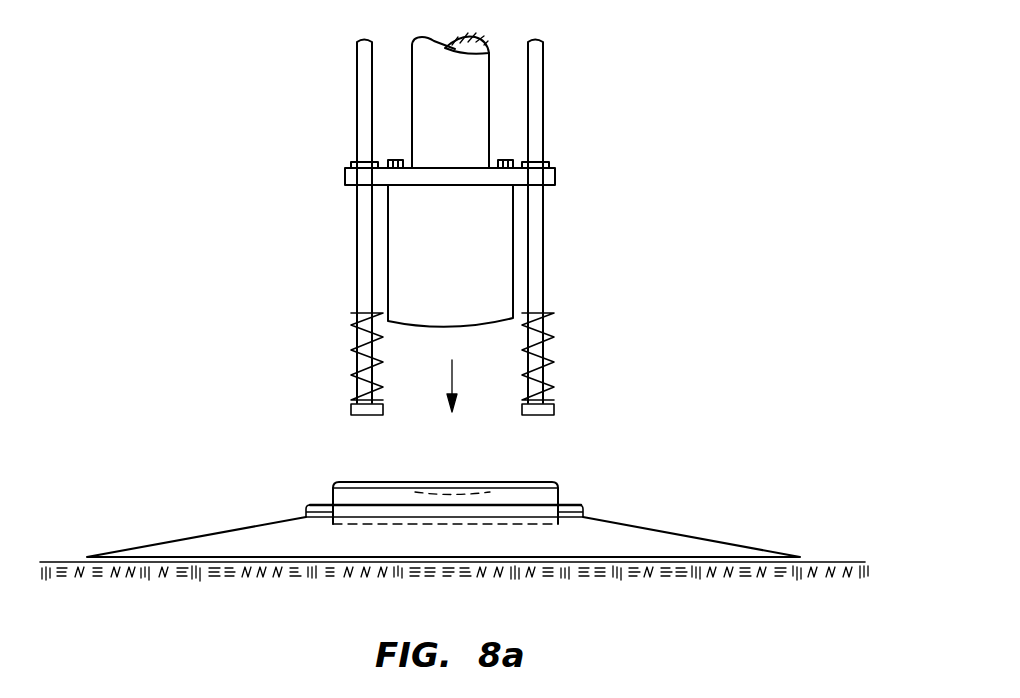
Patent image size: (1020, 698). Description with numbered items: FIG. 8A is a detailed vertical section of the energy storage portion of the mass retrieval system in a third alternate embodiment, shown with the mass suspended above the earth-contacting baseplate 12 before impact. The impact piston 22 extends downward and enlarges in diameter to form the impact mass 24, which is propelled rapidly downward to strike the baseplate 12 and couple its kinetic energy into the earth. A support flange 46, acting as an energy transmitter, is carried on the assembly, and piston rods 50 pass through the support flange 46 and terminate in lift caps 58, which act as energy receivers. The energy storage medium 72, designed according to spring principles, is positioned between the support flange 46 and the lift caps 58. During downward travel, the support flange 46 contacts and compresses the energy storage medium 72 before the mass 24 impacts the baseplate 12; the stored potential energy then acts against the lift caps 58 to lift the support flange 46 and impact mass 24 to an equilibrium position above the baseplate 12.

The baseplate 12 is at (655, 530).
The impact piston 22 is at (492, 56).
The impact mass 24 is at (513, 257).
The support flange 46 is at (556, 175).
The piston rods 50 is at (357, 100).
The lift caps 58 is at (352, 411).
The energy storage medium 72 is at (556, 333).